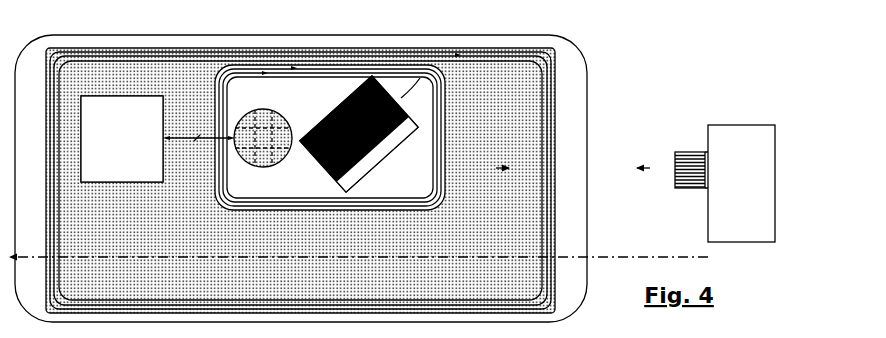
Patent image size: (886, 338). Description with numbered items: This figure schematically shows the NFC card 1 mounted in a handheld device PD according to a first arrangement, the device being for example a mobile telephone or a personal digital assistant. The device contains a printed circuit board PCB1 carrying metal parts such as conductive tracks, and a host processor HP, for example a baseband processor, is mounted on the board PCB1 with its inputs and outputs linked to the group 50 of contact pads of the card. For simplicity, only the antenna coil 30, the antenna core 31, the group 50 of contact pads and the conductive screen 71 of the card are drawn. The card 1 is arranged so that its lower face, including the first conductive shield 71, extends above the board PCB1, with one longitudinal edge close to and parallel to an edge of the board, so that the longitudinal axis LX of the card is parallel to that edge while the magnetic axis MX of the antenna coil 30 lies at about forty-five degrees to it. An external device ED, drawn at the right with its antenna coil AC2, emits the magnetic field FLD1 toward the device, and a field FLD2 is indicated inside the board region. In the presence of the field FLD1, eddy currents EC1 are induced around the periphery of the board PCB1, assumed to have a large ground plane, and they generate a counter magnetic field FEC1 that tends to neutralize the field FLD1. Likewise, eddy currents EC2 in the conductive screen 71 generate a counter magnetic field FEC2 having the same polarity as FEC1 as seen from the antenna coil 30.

The portable device PD is at (94, 36).
The printed circuit board PCB1 is at (152, 47).
The eddy currents EC1 is at (218, 55).
The NFC card 1 is at (260, 57).
The conductive screen 71 is at (315, 64).
The counter magnetic field FEC1 is at (391, 73).
The counter magnetic field FEC2 is at (421, 73).
The host processor HP is at (158, 139).
The group of contact pads 50 is at (272, 113).
The eddy currents EC2 is at (232, 209).
The antenna coil 30 is at (380, 172).
The antenna core 31 is at (304, 160).
The magnetic axis MX is at (318, 178).
The second field direction FLD2 is at (504, 179).
The magnetic field FLD1 is at (644, 179).
The external antenna coil AC2 is at (693, 152).
The external device ED is at (741, 183).
The longitudinal axis LX is at (672, 255).